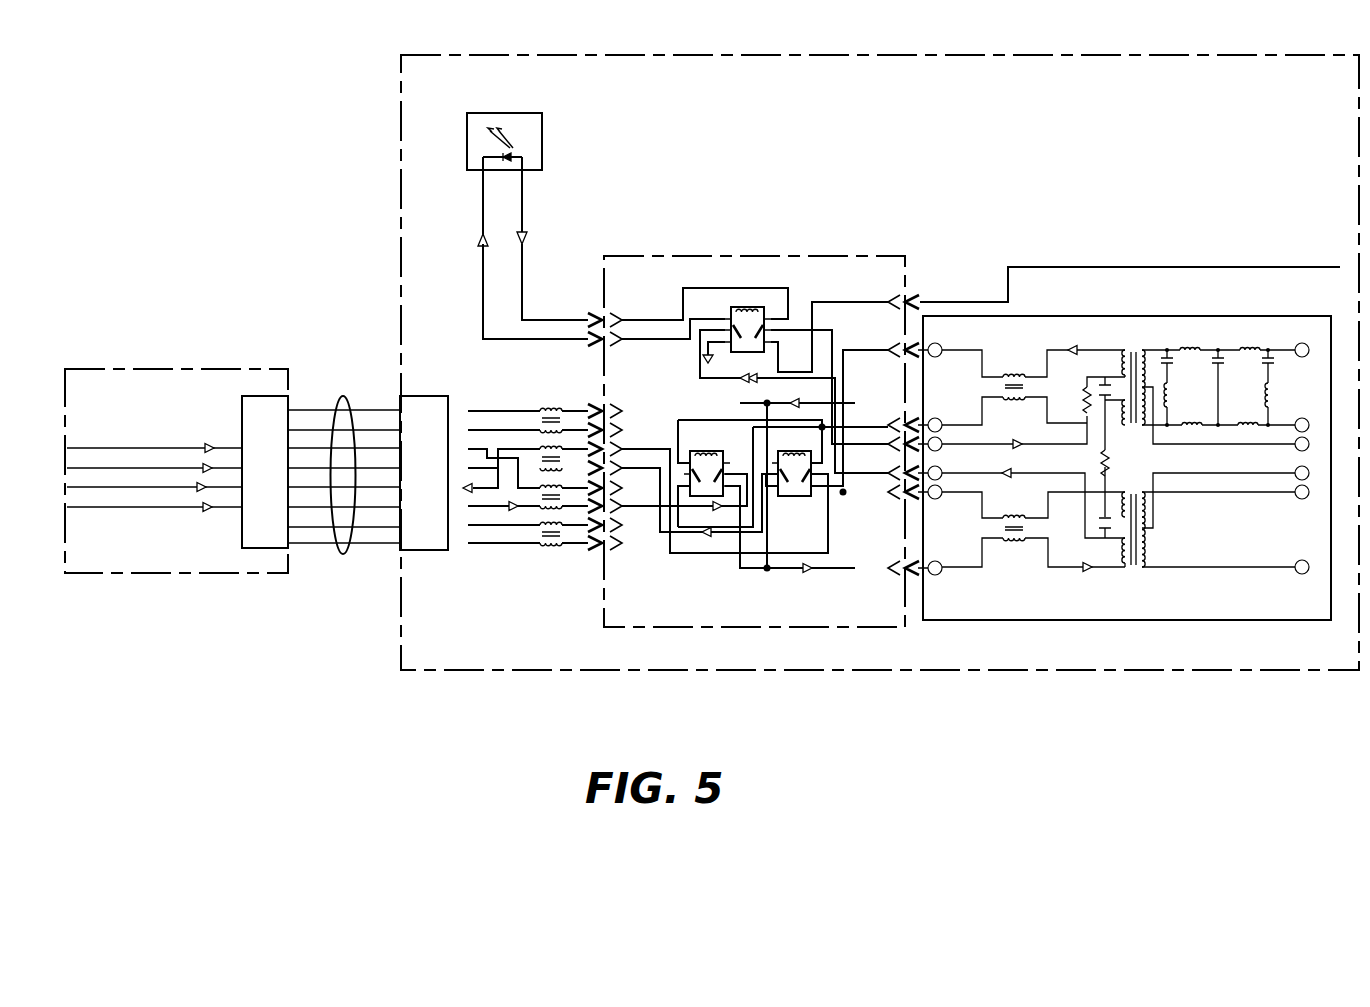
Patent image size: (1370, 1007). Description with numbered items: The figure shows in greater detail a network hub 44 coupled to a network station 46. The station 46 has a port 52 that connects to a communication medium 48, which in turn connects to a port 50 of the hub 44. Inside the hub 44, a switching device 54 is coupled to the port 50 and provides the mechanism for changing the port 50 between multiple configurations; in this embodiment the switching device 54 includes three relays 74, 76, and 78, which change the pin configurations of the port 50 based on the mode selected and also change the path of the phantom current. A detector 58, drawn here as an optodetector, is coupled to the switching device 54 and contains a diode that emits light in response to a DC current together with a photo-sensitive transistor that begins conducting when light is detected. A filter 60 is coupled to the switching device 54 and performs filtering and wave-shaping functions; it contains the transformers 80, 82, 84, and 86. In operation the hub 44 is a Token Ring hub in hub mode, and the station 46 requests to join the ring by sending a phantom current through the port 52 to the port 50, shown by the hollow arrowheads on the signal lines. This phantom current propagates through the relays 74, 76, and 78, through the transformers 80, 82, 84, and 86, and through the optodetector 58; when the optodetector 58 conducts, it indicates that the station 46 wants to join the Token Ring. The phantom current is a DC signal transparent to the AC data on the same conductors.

The network hub 44 is at (1349, 669).
The network station 46 is at (94, 570).
The communication medium 48 is at (343, 554).
The port 50 is at (432, 552).
The port 52 is at (238, 534).
The switching device 54 is at (899, 623).
The optodetector 58 is at (545, 137).
The filter 60 is at (1322, 616).
The relay 74 is at (734, 289).
The relay 76 is at (698, 445).
The relay 78 is at (795, 504).
The transformer 80 is at (1018, 557).
The transformer 82 is at (1016, 361).
The transformer 84 is at (1118, 574).
The transformer 86 is at (1120, 344).